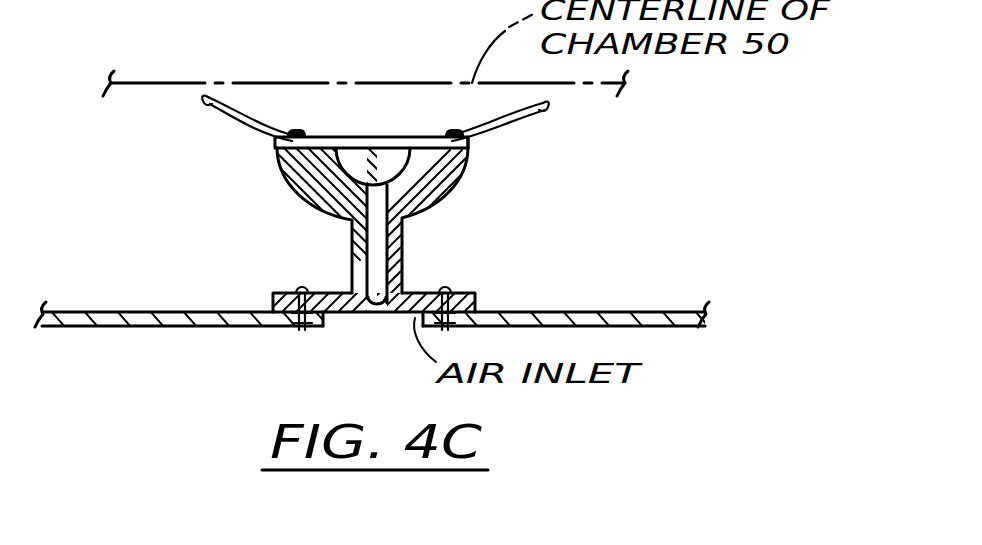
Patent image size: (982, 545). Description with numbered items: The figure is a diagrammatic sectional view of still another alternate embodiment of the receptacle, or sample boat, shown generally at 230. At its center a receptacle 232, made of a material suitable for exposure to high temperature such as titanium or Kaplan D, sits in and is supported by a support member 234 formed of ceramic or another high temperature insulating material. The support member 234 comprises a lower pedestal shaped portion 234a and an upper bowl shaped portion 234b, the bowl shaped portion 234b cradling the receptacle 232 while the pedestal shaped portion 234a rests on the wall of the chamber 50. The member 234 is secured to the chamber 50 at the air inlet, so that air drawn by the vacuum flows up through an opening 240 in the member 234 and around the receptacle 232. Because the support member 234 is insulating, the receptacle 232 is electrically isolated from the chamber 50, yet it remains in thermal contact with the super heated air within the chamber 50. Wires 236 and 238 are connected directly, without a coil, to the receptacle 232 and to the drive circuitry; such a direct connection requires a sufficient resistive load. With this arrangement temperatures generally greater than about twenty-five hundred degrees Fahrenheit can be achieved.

The chamber 50 is at (663, 326).
The receptacle embodiment 230 is at (626, 234).
The receptacle 232 is at (373, 162).
The support member 234 is at (437, 213).
The lower pedestal shaped portion 234a is at (405, 270).
The upper bowl shaped portion 234b is at (470, 178).
The wire 236 is at (533, 120).
The wire 238 is at (248, 125).
The opening 240 is at (373, 315).